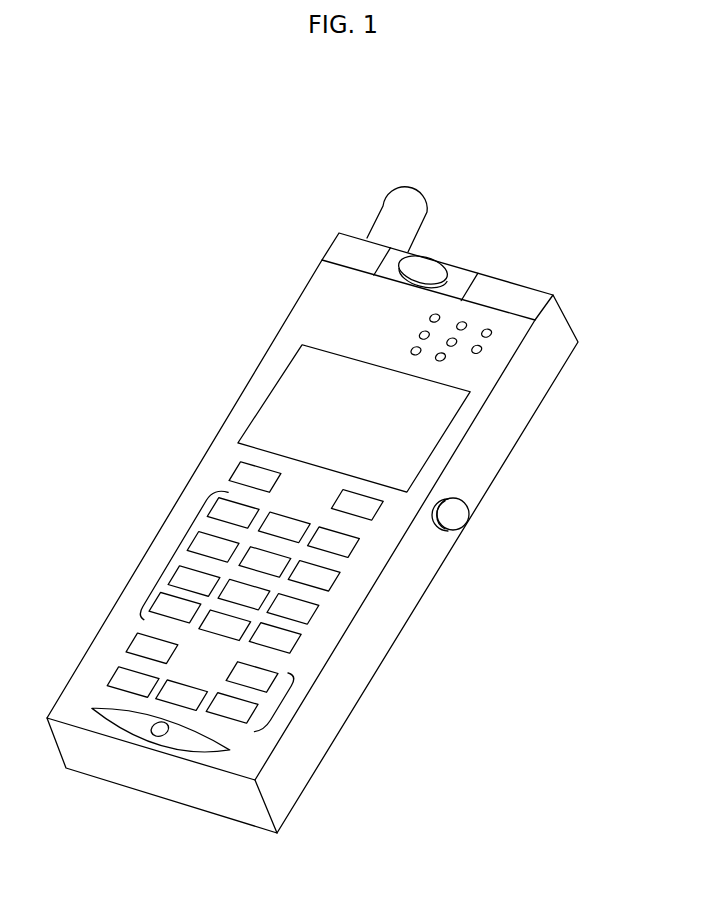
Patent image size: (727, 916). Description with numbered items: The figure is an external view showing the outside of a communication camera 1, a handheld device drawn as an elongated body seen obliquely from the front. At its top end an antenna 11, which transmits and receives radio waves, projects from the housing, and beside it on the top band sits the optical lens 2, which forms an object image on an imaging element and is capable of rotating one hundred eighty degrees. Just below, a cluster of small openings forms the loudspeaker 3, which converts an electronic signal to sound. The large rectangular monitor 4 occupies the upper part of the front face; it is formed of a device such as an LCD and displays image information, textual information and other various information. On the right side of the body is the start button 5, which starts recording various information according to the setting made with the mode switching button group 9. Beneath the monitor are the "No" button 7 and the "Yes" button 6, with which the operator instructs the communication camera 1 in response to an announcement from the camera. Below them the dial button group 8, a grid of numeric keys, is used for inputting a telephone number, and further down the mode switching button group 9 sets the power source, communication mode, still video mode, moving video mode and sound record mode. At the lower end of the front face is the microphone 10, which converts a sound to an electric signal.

The communication camera 1 is at (360, 670).
The optical lens 2 is at (432, 258).
The loudspeaker 3 is at (491, 330).
The monitor 4 is at (433, 423).
The start button 5 is at (455, 515).
The "Yes" button 6 is at (378, 515).
The "No" button 7 is at (232, 472).
The dial button group 8 is at (167, 548).
The mode switching button group 9 is at (300, 708).
The microphone 10 is at (193, 741).
The antenna 11 is at (408, 198).